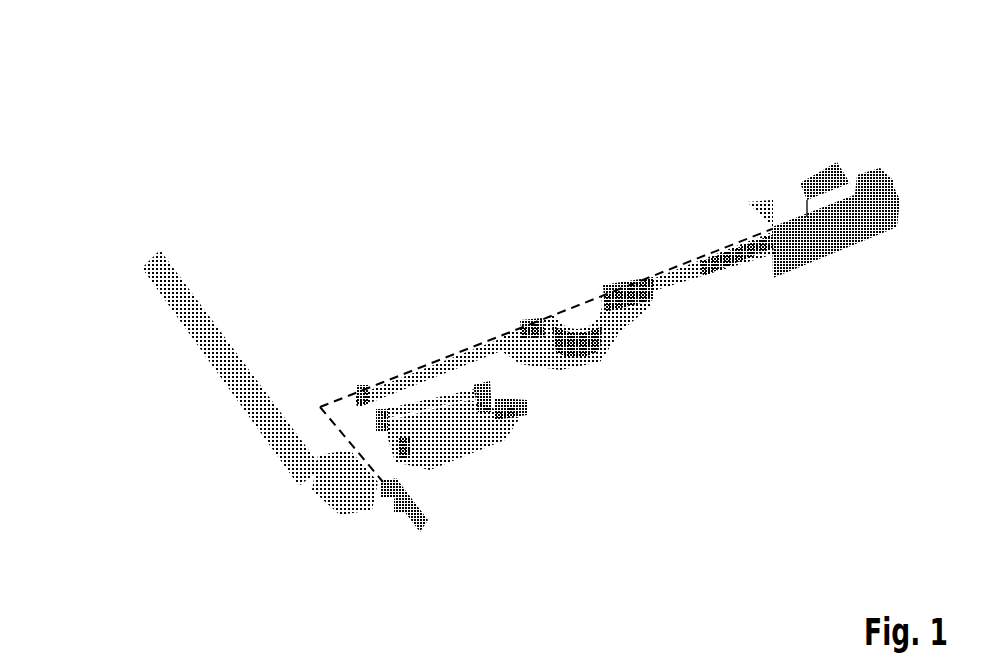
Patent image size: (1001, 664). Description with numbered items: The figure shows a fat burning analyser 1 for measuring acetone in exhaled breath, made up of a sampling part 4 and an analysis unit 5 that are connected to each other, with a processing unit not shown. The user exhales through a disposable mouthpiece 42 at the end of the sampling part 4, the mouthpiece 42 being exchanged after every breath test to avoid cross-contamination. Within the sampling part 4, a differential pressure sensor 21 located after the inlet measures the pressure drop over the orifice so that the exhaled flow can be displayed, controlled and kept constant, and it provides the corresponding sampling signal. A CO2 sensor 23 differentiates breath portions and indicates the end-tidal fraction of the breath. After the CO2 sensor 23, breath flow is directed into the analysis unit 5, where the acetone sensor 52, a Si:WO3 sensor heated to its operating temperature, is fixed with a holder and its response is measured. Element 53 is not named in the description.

The fat burning analyser 1 is at (466, 148).
The sampling part 4 is at (257, 192).
The analysis unit 5 is at (790, 122).
The pressure sensor 21 is at (512, 383).
The CO2 sensor 23 is at (565, 288).
The mouthpiece 42 is at (387, 498).
The acetone sensor 52 is at (830, 247).
The bearing 53 is at (80, 143).